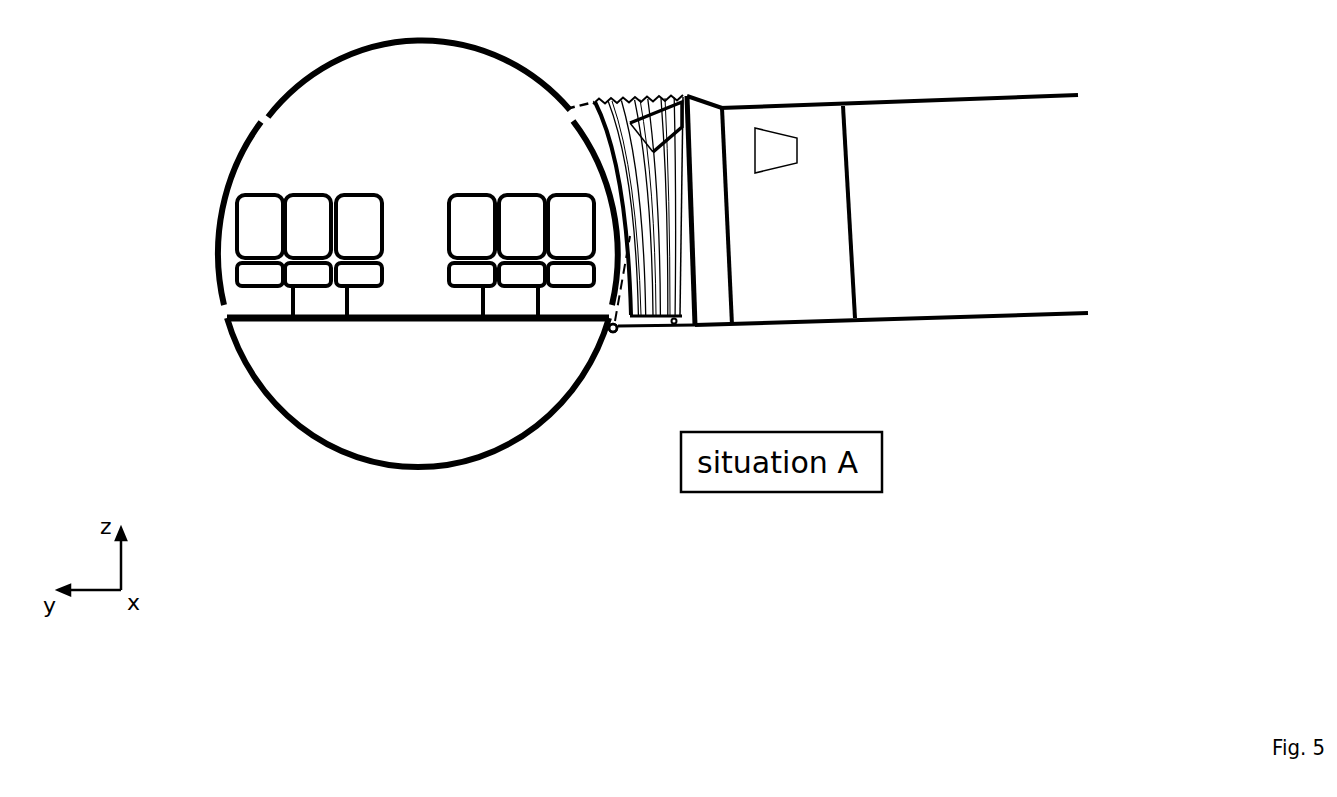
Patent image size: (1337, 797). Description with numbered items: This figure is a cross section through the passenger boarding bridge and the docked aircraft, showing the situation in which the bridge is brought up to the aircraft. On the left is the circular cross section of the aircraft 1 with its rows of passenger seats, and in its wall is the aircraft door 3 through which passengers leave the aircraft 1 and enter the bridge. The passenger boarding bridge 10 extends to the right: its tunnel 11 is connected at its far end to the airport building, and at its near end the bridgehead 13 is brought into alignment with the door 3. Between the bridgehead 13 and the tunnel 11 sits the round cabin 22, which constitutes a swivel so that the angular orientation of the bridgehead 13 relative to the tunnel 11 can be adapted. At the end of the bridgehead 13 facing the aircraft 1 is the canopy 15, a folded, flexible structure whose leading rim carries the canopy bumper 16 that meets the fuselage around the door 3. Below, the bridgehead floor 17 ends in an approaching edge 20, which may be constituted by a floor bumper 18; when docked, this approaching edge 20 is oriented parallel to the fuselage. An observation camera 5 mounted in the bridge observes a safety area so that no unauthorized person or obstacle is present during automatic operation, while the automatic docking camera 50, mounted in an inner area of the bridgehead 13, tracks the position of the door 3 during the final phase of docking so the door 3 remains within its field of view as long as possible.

The aircraft 1 is at (327, 62).
The aircraft door 3 is at (574, 128).
The observation camera 5 is at (784, 164).
The passenger boarding bridge 10 is at (875, 64).
The tunnel 11 is at (1013, 209).
The bridgehead 13 is at (682, 55).
The canopy 15 is at (641, 101).
The canopy bumper 16 is at (583, 104).
The bridgehead floor 17 is at (676, 324).
The floor bumper 18 is at (616, 332).
The approaching edge 20 is at (613, 328).
The round cabin 22 is at (790, 276).
The automatic docking camera 50 is at (674, 120).